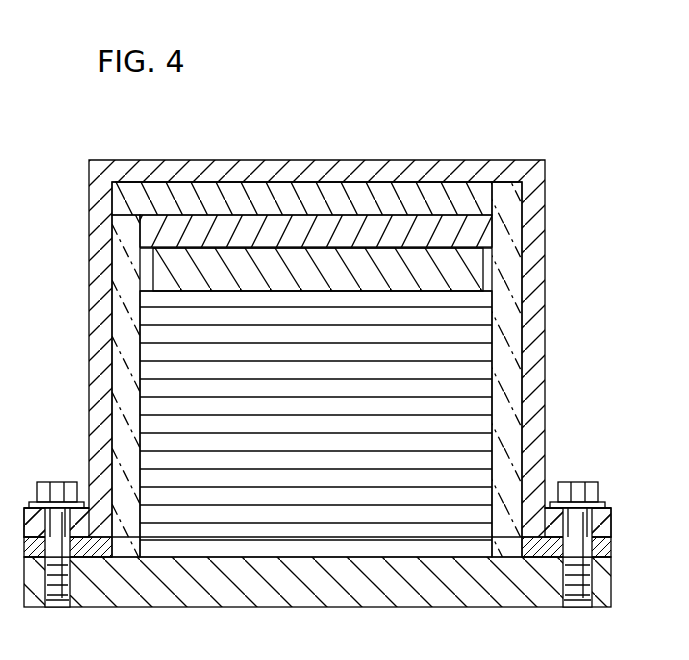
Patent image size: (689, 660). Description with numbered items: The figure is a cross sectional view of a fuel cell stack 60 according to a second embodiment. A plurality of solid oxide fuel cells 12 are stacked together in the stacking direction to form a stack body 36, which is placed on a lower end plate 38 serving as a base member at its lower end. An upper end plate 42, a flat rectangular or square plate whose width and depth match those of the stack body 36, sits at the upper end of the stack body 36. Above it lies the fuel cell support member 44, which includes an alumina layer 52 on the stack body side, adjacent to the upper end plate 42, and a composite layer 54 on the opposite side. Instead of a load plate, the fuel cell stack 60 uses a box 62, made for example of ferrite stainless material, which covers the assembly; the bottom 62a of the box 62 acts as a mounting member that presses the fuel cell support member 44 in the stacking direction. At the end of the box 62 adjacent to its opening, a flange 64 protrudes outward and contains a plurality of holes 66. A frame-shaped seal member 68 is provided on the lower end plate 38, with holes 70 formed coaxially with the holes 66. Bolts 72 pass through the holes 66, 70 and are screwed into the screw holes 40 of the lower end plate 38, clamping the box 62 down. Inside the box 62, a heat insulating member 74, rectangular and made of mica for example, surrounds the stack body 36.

The fuel cell stack 60 is at (237, 110).
The box 62 is at (372, 160).
The bottom (mounting member) of the box 62a is at (316, 183).
The flange 64 is at (603, 523).
The holes 66 is at (612, 509).
The holes 70 is at (603, 546).
The seal member 68 is at (612, 557).
The lower end plate (base member) 38 is at (517, 608).
The screw holes 40 is at (588, 597).
The bolts 72 is at (577, 483).
The heat insulating member 74 is at (510, 405).
The fuel cell support member 44 is at (377, 214).
The composite layer 54 is at (483, 203).
The alumina layer 52 is at (483, 237).
The upper end plate 42 is at (452, 283).
The stack body 36 is at (391, 424).
The solid oxide fuel cells 12 is at (483, 317).